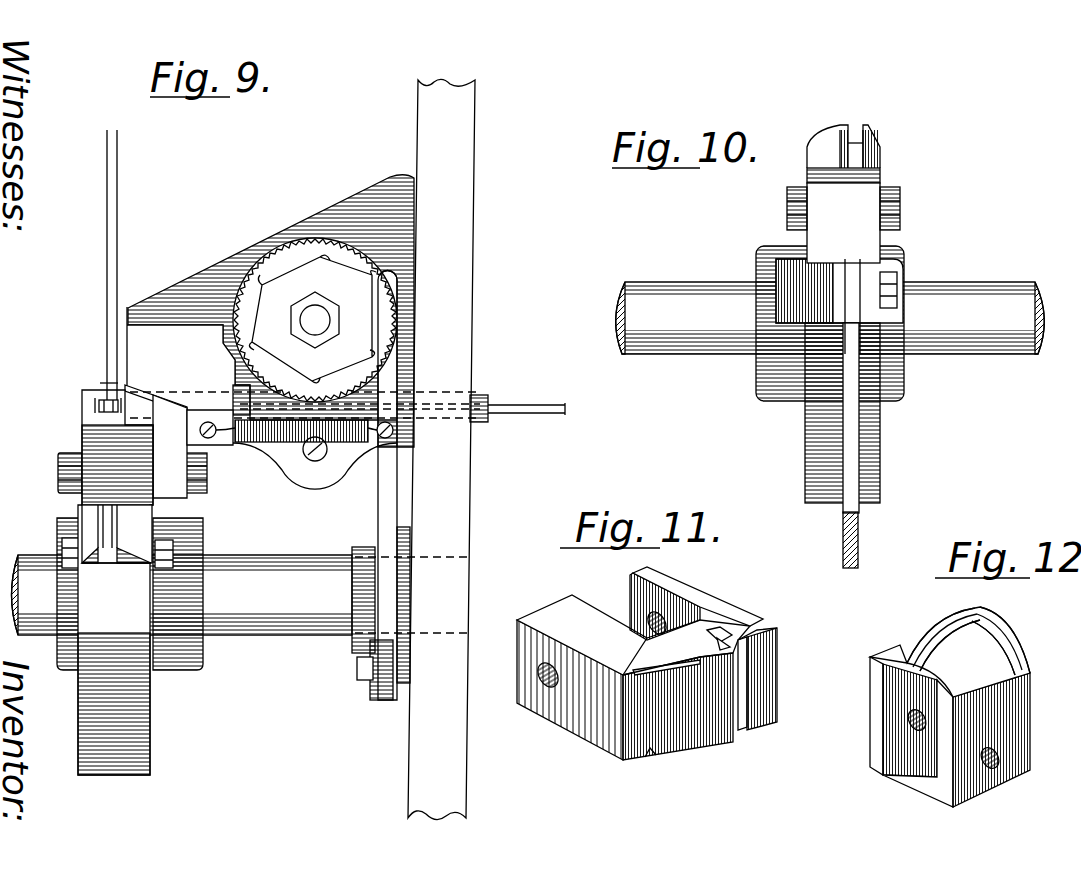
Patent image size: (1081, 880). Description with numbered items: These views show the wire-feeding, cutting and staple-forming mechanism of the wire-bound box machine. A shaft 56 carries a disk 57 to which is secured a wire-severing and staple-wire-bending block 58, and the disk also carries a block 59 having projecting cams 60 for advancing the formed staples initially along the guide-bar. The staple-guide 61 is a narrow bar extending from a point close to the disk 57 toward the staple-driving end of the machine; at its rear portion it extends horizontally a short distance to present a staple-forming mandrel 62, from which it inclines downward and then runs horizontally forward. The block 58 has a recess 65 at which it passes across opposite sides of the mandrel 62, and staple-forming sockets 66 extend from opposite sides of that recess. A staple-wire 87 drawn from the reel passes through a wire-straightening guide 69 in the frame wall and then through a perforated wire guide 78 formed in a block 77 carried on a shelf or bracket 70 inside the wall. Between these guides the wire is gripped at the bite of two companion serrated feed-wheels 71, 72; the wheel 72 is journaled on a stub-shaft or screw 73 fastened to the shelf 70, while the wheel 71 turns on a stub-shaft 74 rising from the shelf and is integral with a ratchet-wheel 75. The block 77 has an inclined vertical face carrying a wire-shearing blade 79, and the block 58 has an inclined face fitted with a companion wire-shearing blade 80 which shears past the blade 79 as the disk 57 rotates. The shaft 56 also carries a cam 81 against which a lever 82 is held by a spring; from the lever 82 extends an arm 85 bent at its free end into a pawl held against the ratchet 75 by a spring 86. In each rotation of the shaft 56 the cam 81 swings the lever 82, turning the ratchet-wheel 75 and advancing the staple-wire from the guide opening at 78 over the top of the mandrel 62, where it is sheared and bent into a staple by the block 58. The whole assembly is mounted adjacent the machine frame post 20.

In FIG. 9, the post 20 is at (412, 748).
In FIG. 9, the shaft 56 is at (182, 595).
In FIG. 10, the shaft 56 is at (830, 318).
In FIG. 9, the disk 57 is at (115, 582).
In FIG. 10, the disk 57 is at (873, 422).
In FIG. 9, the wire-severing and staple-wire-bending block 58 is at (187, 480).
In FIG. 10, the wire-severing and staple-wire-bending block 58 is at (880, 282).
In FIG. 11, the wire-severing and staple-wire-bending block 58 is at (633, 677).
In FIG. 9, the block 59 is at (90, 515).
In FIG. 10, the block 59 is at (873, 160).
In FIG. 12, the block 59 is at (1018, 698).
In FIG. 9, the projecting cams 60 is at (117, 552).
In FIG. 10, the projecting cams 60 is at (862, 126).
In FIG. 12, the projecting cams 60 is at (1000, 622).
In FIG. 9, the staple-guide 61 is at (106, 228).
In FIG. 10, the staple-guide 61 is at (843, 540).
In FIG. 9, the staple-forming mandrel 62 is at (105, 384).
In FIG. 9, the recess 65 is at (100, 410).
In FIG. 10, the recess 65 is at (851, 276).
In FIG. 11, the recess 65 is at (722, 632).
In FIG. 9, the staple-forming sockets 66 is at (132, 414).
In FIG. 11, the staple-forming sockets 66 is at (716, 645).
In FIG. 9, the wire-straightening guide 69 is at (484, 398).
In FIG. 9, the shelf or bracket 70 is at (228, 270).
In FIG. 9, the staple-wire feed-wheel 71 is at (276, 252).
In FIG. 9, the staple-wire feed-wheel 72 is at (316, 482).
In FIG. 9, the stub-shaft or screw 73 is at (326, 458).
In FIG. 9, the stub-shaft 74 is at (334, 320).
In FIG. 9, the ratchet-wheel 75 is at (332, 262).
In FIG. 9, the block 77 is at (152, 332).
In FIG. 9, the perforated wire guide 78 is at (240, 400).
In FIG. 9, the wire-shearing blade 79 is at (153, 394).
In FIG. 9, the wire-shearing blade 80 is at (176, 434).
In FIG. 10, the wire-shearing blade 80 is at (785, 272).
In FIG. 11, the wire-shearing blade 80 is at (680, 740).
In FIG. 9, the cam 81 is at (403, 553).
In FIG. 9, the lever 82 is at (396, 665).
In FIG. 9, the arm 85 is at (387, 482).
In FIG. 9, the spring 86 is at (266, 436).
In FIG. 9, the staple-wire 87 is at (530, 415).